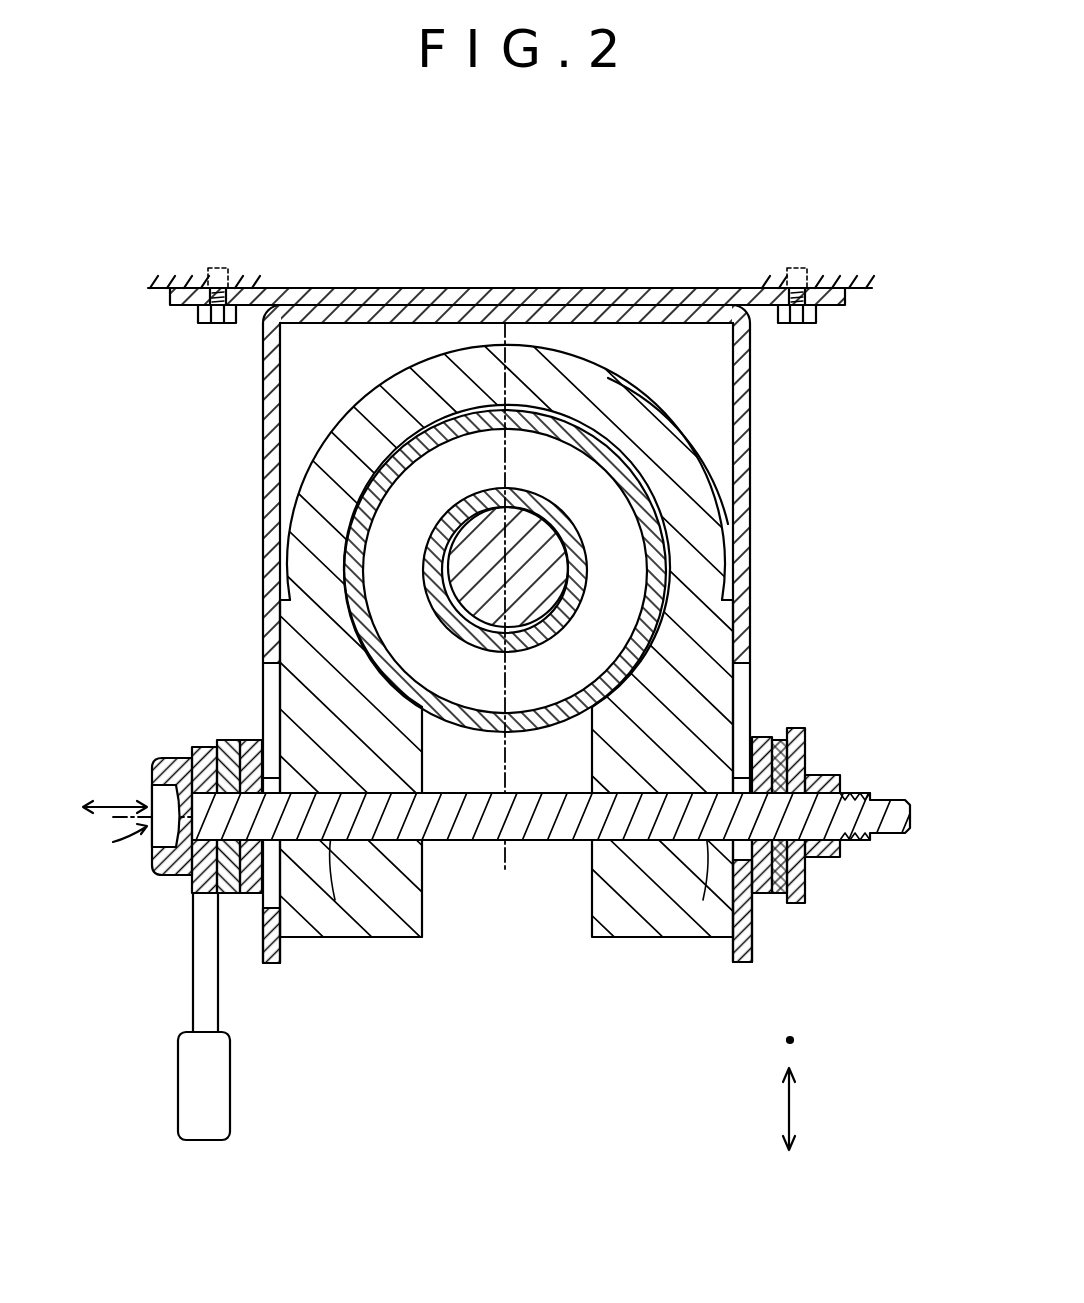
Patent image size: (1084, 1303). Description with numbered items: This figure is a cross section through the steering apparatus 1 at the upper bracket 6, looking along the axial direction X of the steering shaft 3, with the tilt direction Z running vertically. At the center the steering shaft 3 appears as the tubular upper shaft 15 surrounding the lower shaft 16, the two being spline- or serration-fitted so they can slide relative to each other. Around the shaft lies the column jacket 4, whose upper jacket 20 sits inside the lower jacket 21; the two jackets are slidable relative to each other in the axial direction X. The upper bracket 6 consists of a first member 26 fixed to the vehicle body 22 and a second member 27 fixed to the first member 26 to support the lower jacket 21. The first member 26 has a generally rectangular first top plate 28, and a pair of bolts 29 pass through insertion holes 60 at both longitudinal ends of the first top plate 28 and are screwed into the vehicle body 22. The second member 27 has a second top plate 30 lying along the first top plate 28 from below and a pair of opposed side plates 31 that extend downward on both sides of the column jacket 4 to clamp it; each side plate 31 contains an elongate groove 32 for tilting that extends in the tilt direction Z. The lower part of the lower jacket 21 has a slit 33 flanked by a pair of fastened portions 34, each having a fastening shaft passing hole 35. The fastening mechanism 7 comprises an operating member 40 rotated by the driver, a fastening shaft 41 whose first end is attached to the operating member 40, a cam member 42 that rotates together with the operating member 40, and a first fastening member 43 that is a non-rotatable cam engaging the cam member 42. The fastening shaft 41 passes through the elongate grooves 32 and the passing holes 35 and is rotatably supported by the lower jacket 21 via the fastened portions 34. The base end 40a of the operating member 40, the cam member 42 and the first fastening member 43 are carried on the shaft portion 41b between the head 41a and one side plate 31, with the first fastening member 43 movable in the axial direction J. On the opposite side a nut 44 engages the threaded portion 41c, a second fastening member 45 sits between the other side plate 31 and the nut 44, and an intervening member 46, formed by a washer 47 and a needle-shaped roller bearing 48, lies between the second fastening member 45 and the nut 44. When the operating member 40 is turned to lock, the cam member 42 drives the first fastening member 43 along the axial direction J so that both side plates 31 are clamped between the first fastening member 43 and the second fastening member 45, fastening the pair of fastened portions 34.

The steering apparatus 1 is at (542, 694).
The steering shaft 3 is at (372, 569).
The column jacket 4 is at (542, 675).
The upper bracket 6 is at (507, 256).
The fastening mechanism 7 is at (117, 842).
The upper shaft 15 is at (440, 533).
The lower shaft 16 is at (455, 572).
The upper jacket 20 is at (663, 563).
The lower jacket 21 is at (542, 675).
The vehicle body 22 is at (157, 283).
The first member 26 is at (507, 257).
The second member 27 is at (512, 598).
The first top plate 28 is at (385, 296).
The bolt 29 is at (232, 325).
The second top plate 30 is at (668, 312).
The side plate 31 is at (265, 427).
The elongate groove 32 is at (265, 668).
The slit 33 is at (425, 920).
The fastened portion 34 is at (370, 912).
The fastening shaft passing hole 35 is at (325, 900).
The operating member 40 is at (170, 900).
The base end 40a is at (197, 760).
The fastening shaft 41 is at (510, 807).
The head 41a is at (172, 768).
The shaft portion 41b is at (492, 835).
The threaded portion 41c is at (840, 795).
The cam member 42 is at (232, 895).
The first fastening member 43 is at (247, 747).
The nut 44 is at (823, 777).
The second fastening member 45 is at (752, 888).
The intervening member 46 is at (808, 869).
The washer 47 is at (803, 880).
The needle-shaped roller bearing 48 is at (780, 895).
The insertion hole 60 is at (222, 270).
The axial direction J is at (113, 797).
The axial direction X is at (796, 1040).
The tilt direction Z is at (793, 1107).